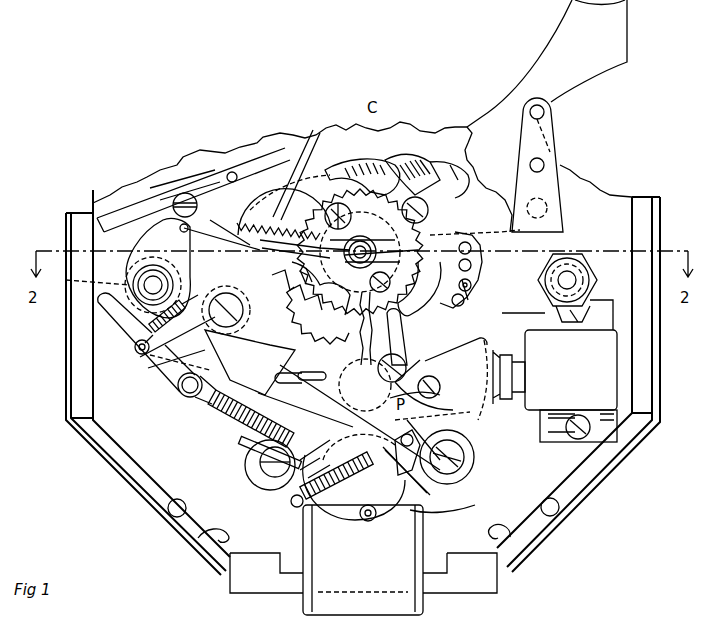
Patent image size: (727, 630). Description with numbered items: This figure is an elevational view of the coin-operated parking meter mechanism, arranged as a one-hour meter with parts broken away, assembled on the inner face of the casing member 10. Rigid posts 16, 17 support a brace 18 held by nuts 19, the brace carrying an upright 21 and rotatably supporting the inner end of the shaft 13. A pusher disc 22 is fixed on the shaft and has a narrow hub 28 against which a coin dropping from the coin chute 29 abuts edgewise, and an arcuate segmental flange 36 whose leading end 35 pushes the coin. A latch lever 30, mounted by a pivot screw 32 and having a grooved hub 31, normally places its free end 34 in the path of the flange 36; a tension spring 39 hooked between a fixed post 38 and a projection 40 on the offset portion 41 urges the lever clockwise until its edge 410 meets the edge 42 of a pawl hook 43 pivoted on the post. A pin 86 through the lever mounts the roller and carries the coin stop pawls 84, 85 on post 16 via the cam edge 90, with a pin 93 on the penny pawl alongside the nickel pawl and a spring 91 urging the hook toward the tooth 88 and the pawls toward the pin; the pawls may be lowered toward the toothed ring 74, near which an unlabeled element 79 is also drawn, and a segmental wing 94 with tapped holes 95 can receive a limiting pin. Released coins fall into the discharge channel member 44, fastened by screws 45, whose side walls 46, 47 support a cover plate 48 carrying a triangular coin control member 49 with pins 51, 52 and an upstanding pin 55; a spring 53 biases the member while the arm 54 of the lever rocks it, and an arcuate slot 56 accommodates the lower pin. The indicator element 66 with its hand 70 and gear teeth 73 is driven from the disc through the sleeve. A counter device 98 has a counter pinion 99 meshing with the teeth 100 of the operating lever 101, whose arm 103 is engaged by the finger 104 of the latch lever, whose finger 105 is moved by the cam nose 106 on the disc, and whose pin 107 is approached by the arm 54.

The casing member 10 is at (669, 340).
The shaft 13 is at (395, 248).
The rigid post 16 is at (132, 282).
The rigid post 17 is at (570, 276).
The brace 18 is at (562, 247).
The nuts 19 is at (586, 291).
The upright 21 is at (548, 130).
The pusher disc 22 is at (435, 305).
The hub 28 is at (445, 231).
The coin chute 29 is at (210, 170).
The latch lever 30 is at (165, 372).
The hub 31 is at (148, 360).
The pivot screw 32 is at (246, 292).
The free end 34 is at (300, 160).
The leading end 35 is at (355, 160).
The arcuate segmental flange 36 is at (382, 160).
The fixed post 38 is at (180, 392).
The tension spring 39 is at (232, 428).
The projection 40 is at (300, 467).
The offset portion 41 is at (288, 384).
The edge 42 is at (207, 340).
The pawl hook 43 is at (118, 336).
The discharge channel member 44 is at (320, 515).
The screws 45 is at (262, 468).
The side wall 46 is at (310, 536).
The side wall 47 is at (425, 545).
The cover plate 48 is at (405, 436).
The coin control member 49 is at (360, 514).
The pin 51 is at (470, 424).
The pin 52 is at (363, 560).
The spring 53 is at (296, 499).
The arm 54 is at (420, 470).
The pin 55 is at (420, 490).
The arcuate slot 56 is at (410, 525).
The indicator element 66 is at (490, 160).
The hand 70 is at (615, 38).
The gear teeth 73 is at (366, 305).
The toothed ring 74 is at (398, 178).
The pawl 79 is at (430, 185).
The coin stop pawl 84 is at (260, 163).
The coin stop pawl 85 is at (280, 165).
The pin 86 is at (240, 262).
The tooth 88 is at (125, 297).
The cam edge 90 is at (182, 227).
The spring 91 is at (138, 343).
The pin 93 is at (230, 173).
The segmental wing 94 is at (470, 300).
The tapped holes 95 is at (472, 285).
The counter device 98 is at (571, 386).
The counter pinion 99 is at (505, 368).
The teeth 100 is at (480, 405).
The operating lever 101 is at (430, 350).
The arm 103 is at (330, 395).
The finger 104 is at (292, 312).
The finger 105 is at (400, 338).
The cam nose 106 is at (325, 300).
The pin 107 is at (441, 384).
The edge 410 is at (180, 385).